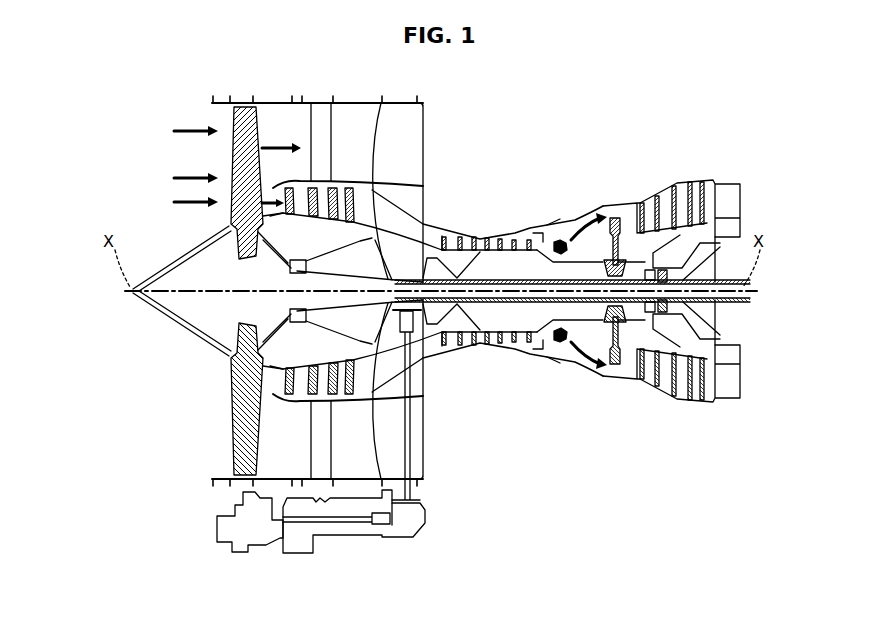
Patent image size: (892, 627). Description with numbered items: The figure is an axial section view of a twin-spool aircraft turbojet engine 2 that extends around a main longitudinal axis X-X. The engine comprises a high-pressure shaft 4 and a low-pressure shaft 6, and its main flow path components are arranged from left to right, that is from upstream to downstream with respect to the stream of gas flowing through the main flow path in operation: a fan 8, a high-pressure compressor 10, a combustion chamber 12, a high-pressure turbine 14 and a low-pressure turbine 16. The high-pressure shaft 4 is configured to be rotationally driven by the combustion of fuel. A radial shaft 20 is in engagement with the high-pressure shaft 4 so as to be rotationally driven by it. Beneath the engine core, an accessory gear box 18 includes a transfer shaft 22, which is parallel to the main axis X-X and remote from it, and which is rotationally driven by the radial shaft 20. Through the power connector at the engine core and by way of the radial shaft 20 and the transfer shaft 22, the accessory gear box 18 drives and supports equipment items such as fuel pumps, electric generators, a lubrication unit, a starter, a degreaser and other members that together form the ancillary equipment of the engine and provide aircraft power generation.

The aircraft turbojet engine 2 is at (536, 120).
The high-pressure shaft 4 is at (487, 275).
The low-pressure shaft 6 is at (394, 275).
The fan 8 is at (245, 163).
The high-pressure compressor 10 is at (450, 338).
The combustion chamber 12 is at (558, 241).
The high-pressure turbine 14 is at (615, 371).
The low-pressure turbine 16 is at (679, 204).
The accessory gear box 18 is at (298, 546).
The radial shaft 20 is at (411, 416).
The transfer shaft 22 is at (343, 520).